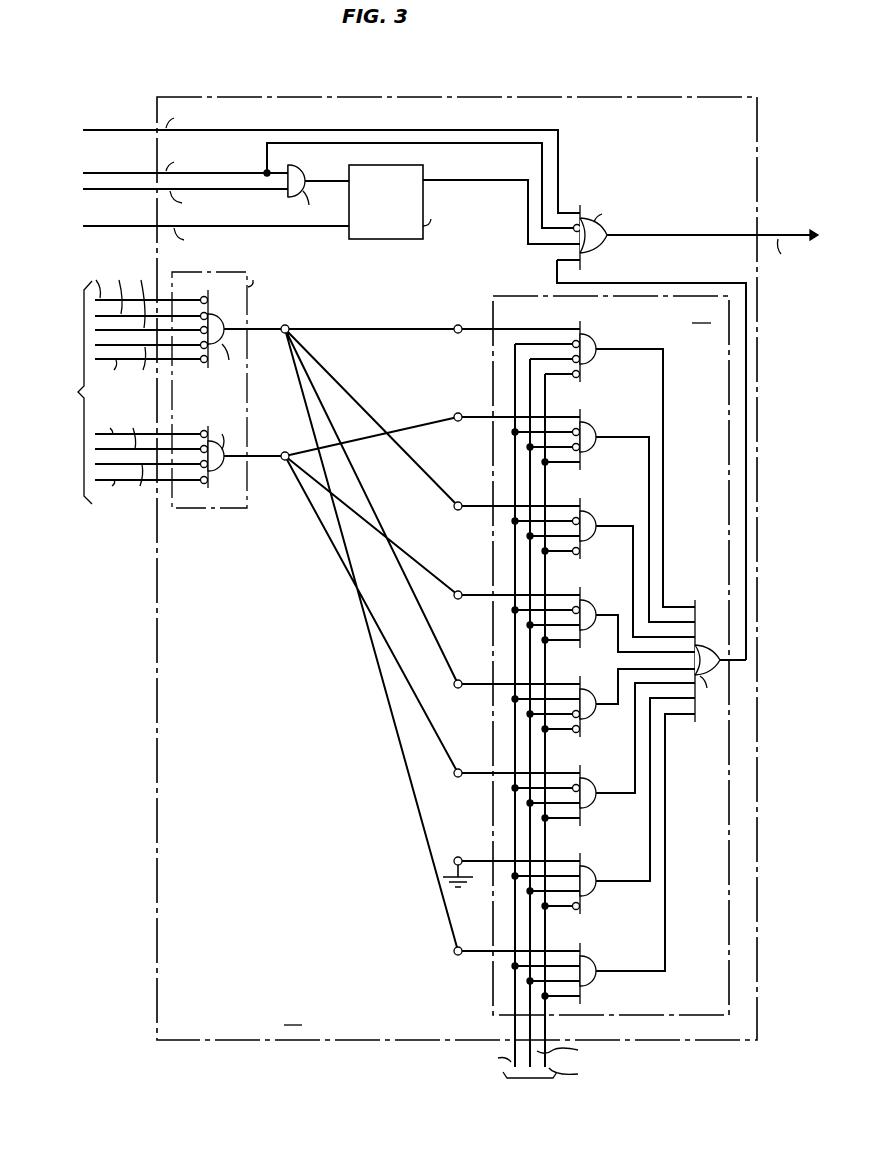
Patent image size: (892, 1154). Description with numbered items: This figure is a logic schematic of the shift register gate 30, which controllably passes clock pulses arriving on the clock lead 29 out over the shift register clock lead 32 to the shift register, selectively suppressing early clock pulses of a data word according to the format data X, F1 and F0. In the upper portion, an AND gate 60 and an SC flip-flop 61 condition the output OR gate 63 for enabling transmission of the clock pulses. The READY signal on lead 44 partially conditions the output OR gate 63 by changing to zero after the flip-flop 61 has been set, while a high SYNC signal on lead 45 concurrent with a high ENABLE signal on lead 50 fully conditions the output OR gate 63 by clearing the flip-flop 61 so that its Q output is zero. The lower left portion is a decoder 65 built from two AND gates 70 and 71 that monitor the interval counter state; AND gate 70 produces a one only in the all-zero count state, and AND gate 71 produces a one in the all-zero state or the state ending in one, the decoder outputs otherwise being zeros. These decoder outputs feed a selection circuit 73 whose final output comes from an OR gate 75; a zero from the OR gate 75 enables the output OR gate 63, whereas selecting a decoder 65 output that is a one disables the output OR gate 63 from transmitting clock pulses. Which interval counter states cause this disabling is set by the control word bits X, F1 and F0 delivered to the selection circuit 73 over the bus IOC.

The clock lead 29 is at (321, 160).
The ENABLE signal lead 50 is at (317, 185).
The SYNC signal lead 45 is at (175, 201).
The READY signal lead 44 is at (205, 238).
The AND gate 60 is at (318, 189).
The SC flip-flop 61 is at (464, 204).
The output OR gate 63 is at (651, 429).
The shift register clock lead 32 is at (712, 231).
The decoder 65 is at (156, 386).
The AND gate 70 is at (243, 333).
The AND gate 71 is at (243, 456).
The selection circuit 73 is at (505, 701).
The OR gate 75 is at (720, 661).
The shift register gate 30 is at (457, 568).